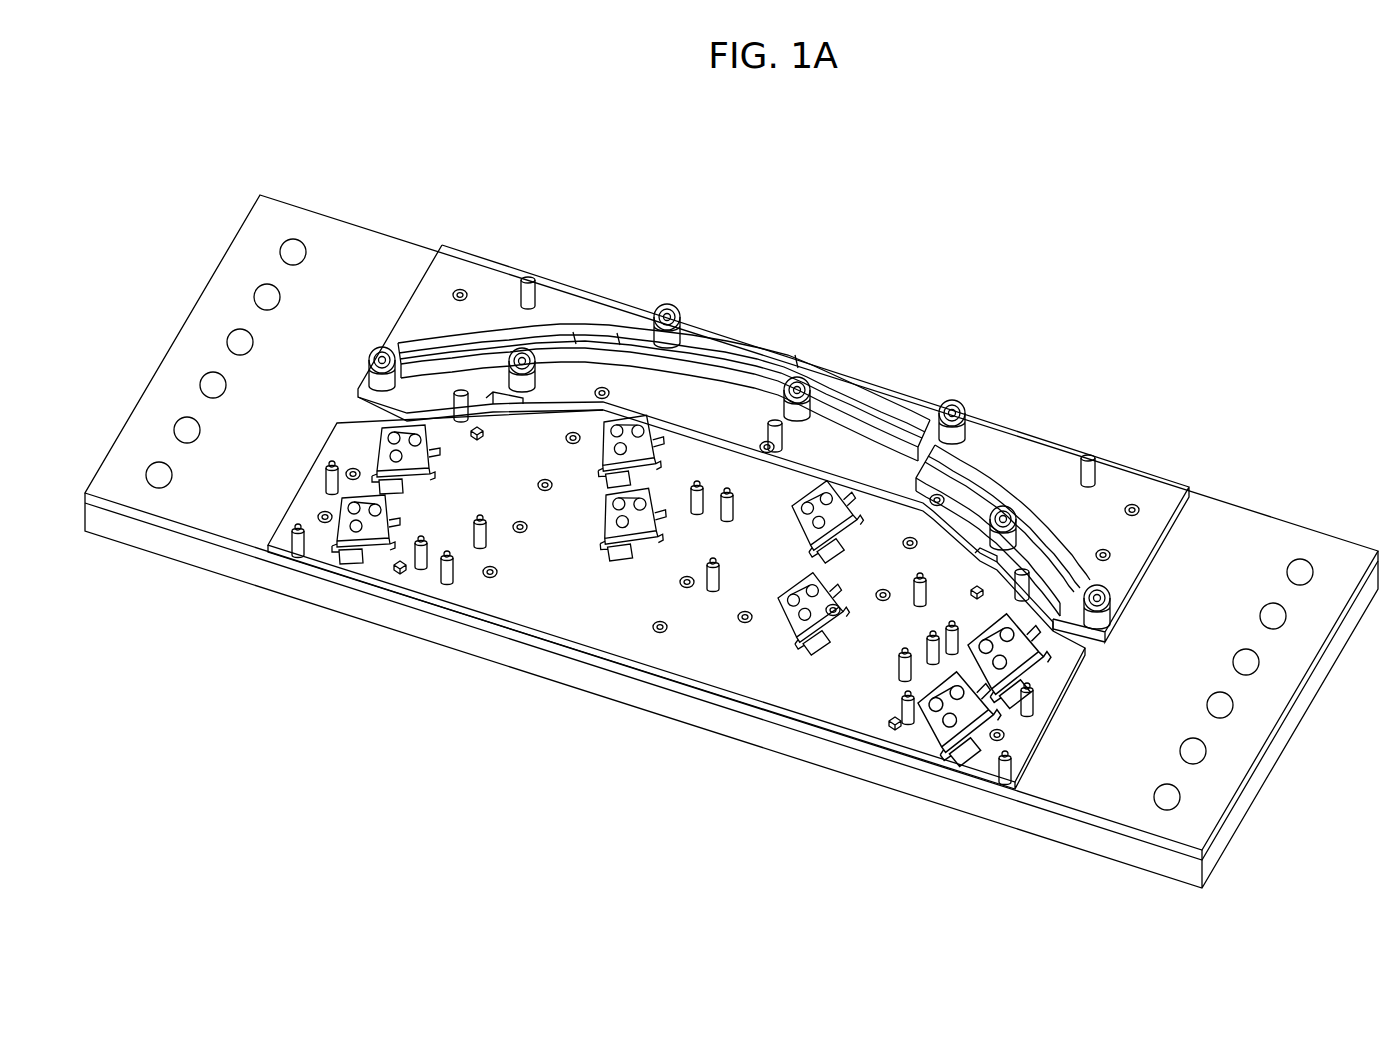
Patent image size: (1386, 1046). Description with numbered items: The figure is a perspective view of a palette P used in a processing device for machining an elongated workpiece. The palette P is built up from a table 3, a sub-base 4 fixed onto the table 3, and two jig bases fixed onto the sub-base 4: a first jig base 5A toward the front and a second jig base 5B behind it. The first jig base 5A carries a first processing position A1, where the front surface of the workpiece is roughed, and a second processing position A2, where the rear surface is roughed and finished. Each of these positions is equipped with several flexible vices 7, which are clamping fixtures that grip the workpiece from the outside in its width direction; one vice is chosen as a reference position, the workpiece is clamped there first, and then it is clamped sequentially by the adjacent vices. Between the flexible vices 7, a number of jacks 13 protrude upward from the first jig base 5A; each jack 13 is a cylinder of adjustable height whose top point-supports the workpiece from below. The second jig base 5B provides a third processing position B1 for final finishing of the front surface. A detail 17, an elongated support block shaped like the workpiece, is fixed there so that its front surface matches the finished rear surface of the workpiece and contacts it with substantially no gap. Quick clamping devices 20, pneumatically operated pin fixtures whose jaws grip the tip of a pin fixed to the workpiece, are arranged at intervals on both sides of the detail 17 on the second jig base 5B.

The table 3 is at (1253, 800).
The sub-base 4 is at (1286, 703).
The first jig base 5A is at (1048, 722).
The second jig base 5B is at (1160, 539).
The flexible vice 7 is at (432, 447).
The jack 13 is at (484, 530).
The detail 17 is at (905, 400).
The quick clamping device 20 is at (382, 347).
The first processing position A1 is at (1032, 748).
The second processing position A2 is at (1073, 682).
The third processing position B1 is at (1137, 590).
The palette P is at (368, 194).